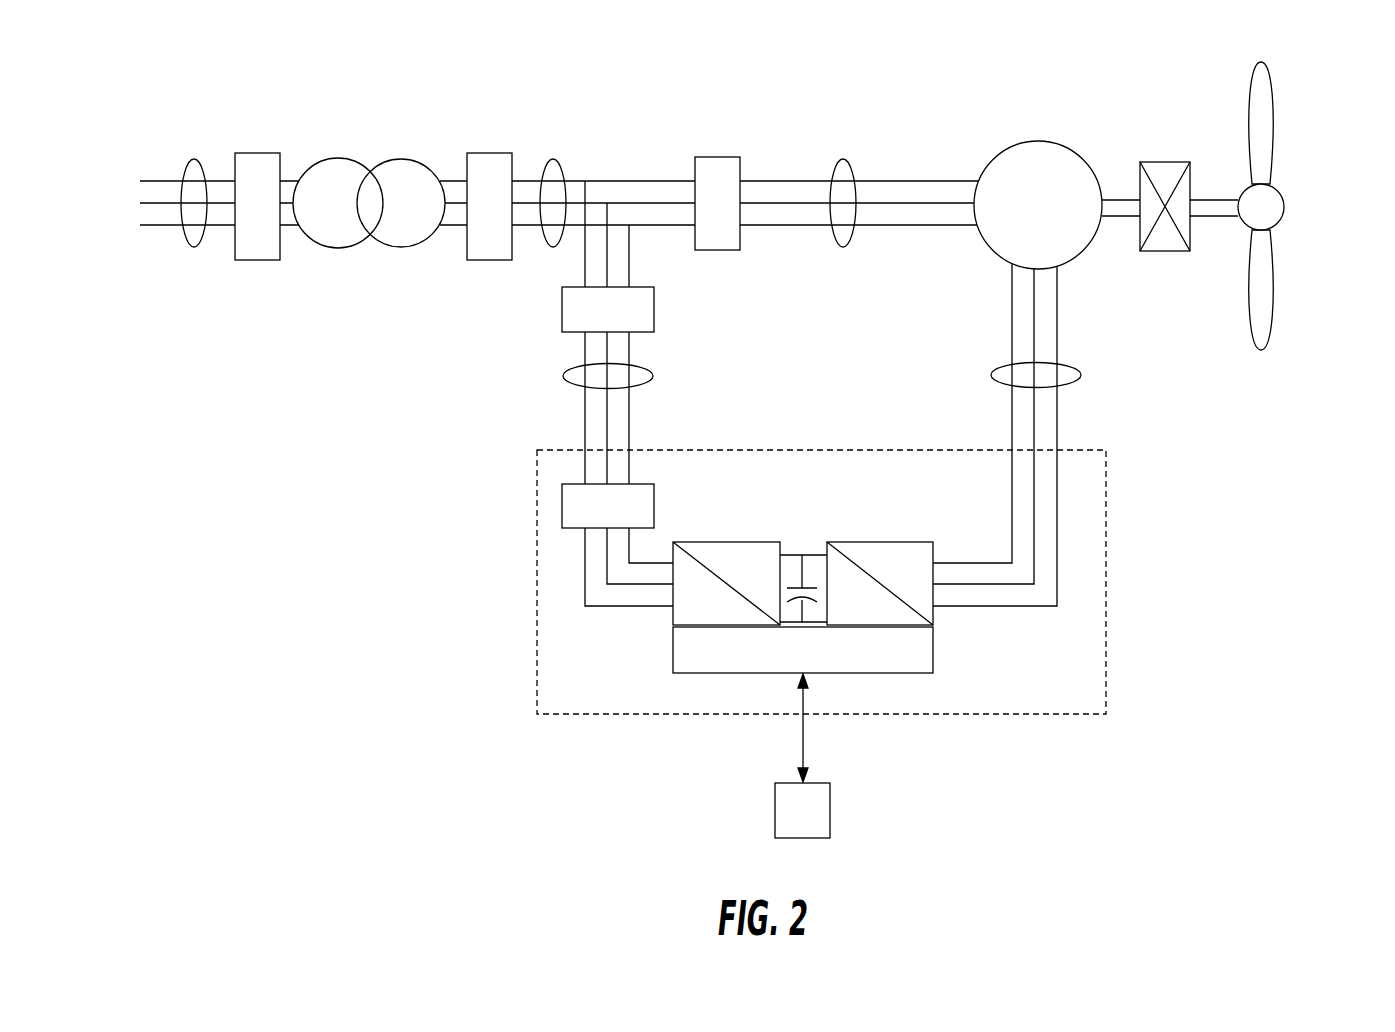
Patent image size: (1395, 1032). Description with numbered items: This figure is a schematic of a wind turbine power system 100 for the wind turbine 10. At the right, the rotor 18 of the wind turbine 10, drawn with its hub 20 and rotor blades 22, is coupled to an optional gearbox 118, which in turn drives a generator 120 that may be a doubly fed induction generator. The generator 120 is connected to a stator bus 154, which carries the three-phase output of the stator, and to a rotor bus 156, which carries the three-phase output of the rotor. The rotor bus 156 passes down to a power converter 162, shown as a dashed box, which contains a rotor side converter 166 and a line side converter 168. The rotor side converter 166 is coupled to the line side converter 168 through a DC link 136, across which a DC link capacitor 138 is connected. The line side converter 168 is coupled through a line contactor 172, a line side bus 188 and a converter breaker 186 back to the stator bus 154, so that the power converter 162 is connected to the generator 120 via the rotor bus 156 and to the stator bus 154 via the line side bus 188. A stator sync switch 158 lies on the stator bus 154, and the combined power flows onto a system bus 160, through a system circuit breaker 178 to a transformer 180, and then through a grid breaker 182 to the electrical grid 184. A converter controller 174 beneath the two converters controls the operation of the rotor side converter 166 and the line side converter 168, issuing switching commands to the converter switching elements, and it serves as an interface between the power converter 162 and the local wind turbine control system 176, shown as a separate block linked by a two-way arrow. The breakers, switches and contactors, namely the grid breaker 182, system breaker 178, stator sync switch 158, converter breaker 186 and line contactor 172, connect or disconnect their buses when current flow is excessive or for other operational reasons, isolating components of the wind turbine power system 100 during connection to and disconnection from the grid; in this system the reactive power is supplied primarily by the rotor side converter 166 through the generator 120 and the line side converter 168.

The wind turbine 10 is at (1297, 66).
The rotor 18 is at (1293, 246).
The rotor hub 20 is at (1284, 207).
The rotor blade 22 is at (1268, 138).
The wind turbine power system 100 is at (442, 635).
The gearbox 118 is at (1165, 162).
The generator 120 is at (1037, 141).
The DC link 136 is at (809, 543).
The DC link capacitor 138 is at (793, 586).
The stator bus 154 is at (843, 158).
The rotor bus 156 is at (1081, 375).
The stator sync switch 158 is at (718, 157).
The system bus 160 is at (553, 158).
The power converter 162 is at (1106, 587).
The rotor side converter 166 is at (933, 618).
The line side converter 168 is at (673, 617).
The line contactor 172 is at (562, 508).
The converter controller 174 is at (713, 675).
The local wind turbine control system 176 is at (830, 812).
The system circuit breaker 178 is at (488, 153).
The transformer 180 is at (393, 158).
The grid breaker 182 is at (256, 153).
The electrical grid 184 is at (194, 158).
The converter breaker 186 is at (562, 312).
The line side bus 188 is at (563, 376).